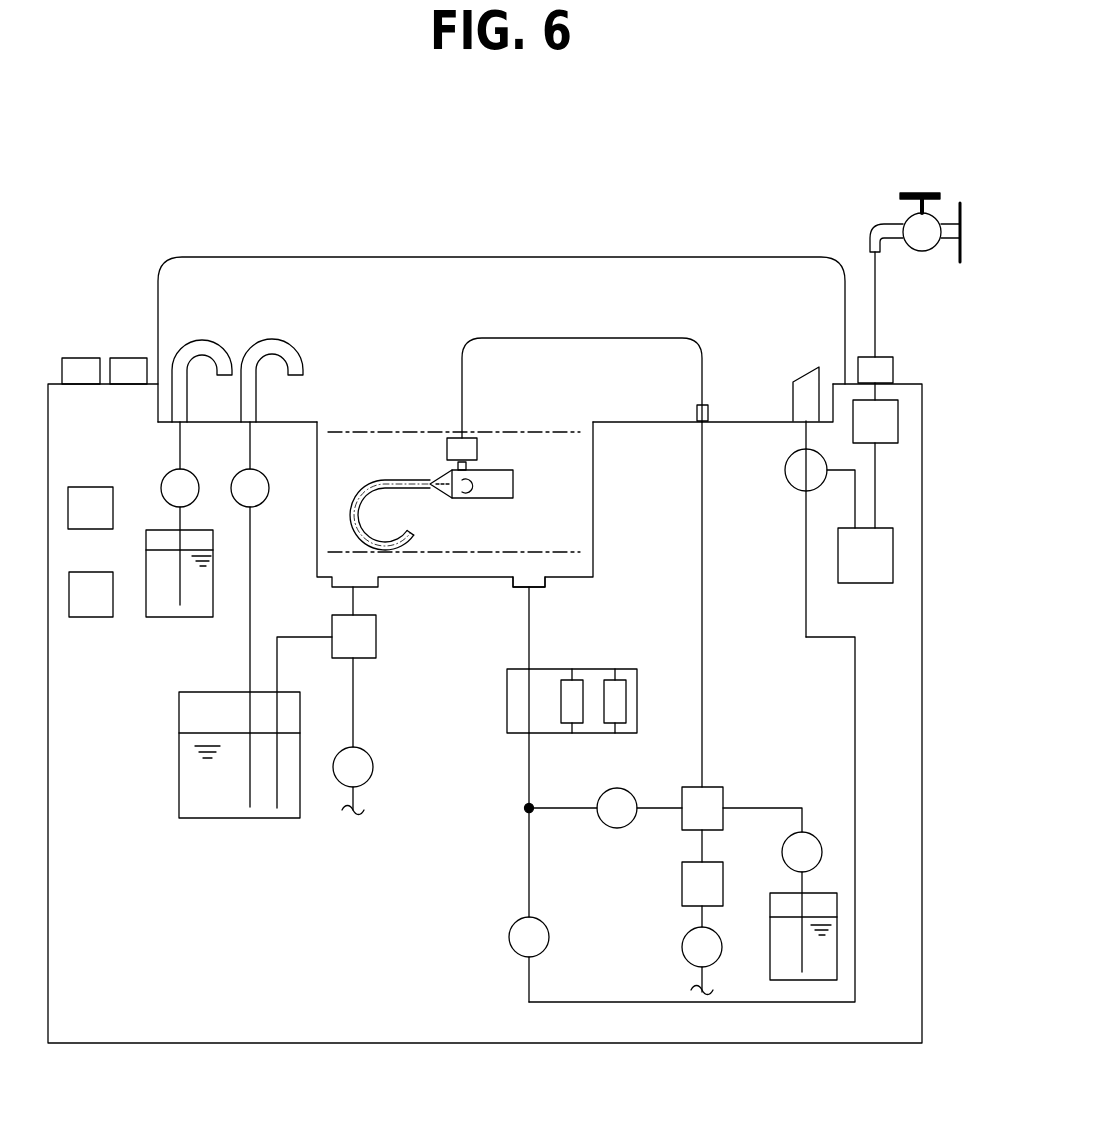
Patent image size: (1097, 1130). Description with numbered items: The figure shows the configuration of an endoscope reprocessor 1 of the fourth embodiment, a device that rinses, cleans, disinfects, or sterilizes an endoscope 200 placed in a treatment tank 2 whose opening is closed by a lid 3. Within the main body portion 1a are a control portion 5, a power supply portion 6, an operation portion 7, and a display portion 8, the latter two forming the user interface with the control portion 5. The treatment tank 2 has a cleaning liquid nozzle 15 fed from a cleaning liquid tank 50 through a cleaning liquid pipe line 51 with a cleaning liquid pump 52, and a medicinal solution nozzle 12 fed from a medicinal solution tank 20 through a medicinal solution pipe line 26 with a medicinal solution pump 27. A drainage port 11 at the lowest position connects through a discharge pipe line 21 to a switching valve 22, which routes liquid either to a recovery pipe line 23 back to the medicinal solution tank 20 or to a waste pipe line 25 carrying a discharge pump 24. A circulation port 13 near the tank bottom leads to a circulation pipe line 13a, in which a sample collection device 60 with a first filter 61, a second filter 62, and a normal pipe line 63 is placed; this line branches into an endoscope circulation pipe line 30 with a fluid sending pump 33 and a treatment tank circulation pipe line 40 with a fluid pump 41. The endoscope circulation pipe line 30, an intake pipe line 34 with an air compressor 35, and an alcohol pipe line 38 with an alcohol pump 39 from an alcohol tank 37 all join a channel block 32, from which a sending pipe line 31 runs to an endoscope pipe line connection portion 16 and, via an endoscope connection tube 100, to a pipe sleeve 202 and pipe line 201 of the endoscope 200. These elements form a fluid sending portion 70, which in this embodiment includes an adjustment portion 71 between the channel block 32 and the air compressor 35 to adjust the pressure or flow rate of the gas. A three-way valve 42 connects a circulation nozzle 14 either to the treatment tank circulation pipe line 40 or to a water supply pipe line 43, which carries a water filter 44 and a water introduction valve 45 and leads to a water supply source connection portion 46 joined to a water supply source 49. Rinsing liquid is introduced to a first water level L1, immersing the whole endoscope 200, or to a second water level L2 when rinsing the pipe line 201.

The endoscope reprocessor 1 is at (129, 226).
The main body portion 1a is at (50, 384).
The treatment tank 2 is at (317, 442).
The lid 3 is at (440, 257).
The control portion 5 is at (100, 487).
The power supply portion 6 is at (103, 572).
The operation portion 7 is at (128, 358).
The display portion 8 is at (80, 358).
The drainage port 11 is at (350, 577).
The medicinal solution nozzle 12 is at (263, 340).
The circulation port 13 is at (527, 587).
The circulation pipe line 13a is at (530, 608).
The circulation nozzle 14 is at (803, 375).
The cleaning liquid nozzle 15 is at (223, 338).
The endoscope pipe line connection portion 16 is at (708, 414).
The medicinal solution tank 20 is at (226, 692).
The discharge pipe line 21 is at (353, 601).
The switching valve 22 is at (370, 615).
The recovery pipe line 23 is at (277, 671).
The discharge pump 24 is at (362, 751).
The waste pipe line 25 is at (355, 696).
The medicinal solution pipe line 26 is at (250, 538).
The medicinal solution pump 27 is at (255, 470).
The endoscope circulation pipe line 30 is at (560, 808).
The sending pipe line 31 is at (703, 746).
The channel block 32 is at (681, 821).
The fluid sending pump 33 is at (608, 791).
The intake pipe line 34 is at (703, 849).
The air compressor 35 is at (718, 961).
The alcohol tank 37 is at (820, 895).
The alcohol pipe line 38 is at (745, 808).
The alcohol pump 39 is at (812, 835).
The treatment tank circulation pipe line 40 is at (529, 869).
The fluid pump 41 is at (540, 956).
The three-way valve 42 is at (790, 461).
The water supply pipe line 43 is at (845, 467).
The water filter 44 is at (893, 553).
The water introduction valve 45 is at (898, 421).
The water supply source connection portion 46 is at (887, 357).
The water supply source 49 is at (884, 228).
The cleaning liquid tank 50 is at (193, 530).
The cleaning liquid pipe line 51 is at (172, 445).
The cleaning liquid pump 52 is at (187, 470).
The sample collection device 60 is at (513, 733).
The first filter 61 is at (583, 695).
The second filter 62 is at (627, 700).
The normal pipe line 63 is at (530, 697).
The fluid sending portion 70 is at (786, 720).
The adjustment portion 71 is at (682, 901).
The endoscope connection tube 100 is at (565, 337).
The endoscope 200 is at (513, 470).
The pipe line 201 is at (452, 470).
The pipe sleeve 202 is at (466, 496).
The first water level L1 is at (580, 432).
The second water level L2 is at (575, 552).